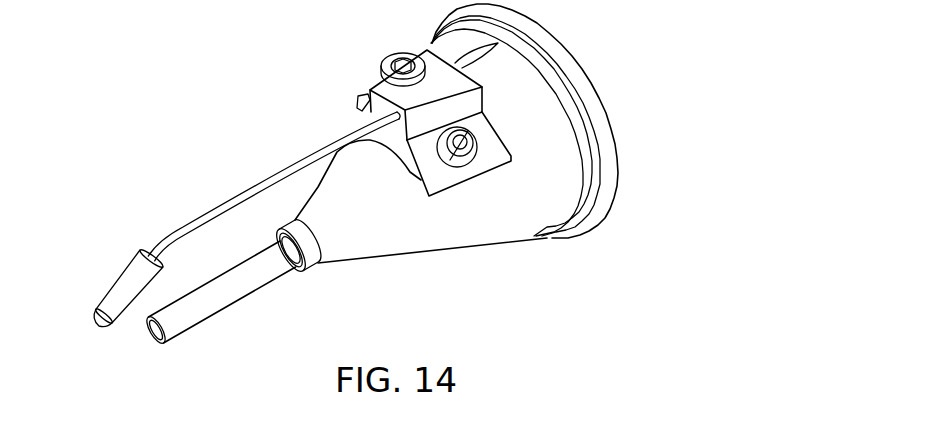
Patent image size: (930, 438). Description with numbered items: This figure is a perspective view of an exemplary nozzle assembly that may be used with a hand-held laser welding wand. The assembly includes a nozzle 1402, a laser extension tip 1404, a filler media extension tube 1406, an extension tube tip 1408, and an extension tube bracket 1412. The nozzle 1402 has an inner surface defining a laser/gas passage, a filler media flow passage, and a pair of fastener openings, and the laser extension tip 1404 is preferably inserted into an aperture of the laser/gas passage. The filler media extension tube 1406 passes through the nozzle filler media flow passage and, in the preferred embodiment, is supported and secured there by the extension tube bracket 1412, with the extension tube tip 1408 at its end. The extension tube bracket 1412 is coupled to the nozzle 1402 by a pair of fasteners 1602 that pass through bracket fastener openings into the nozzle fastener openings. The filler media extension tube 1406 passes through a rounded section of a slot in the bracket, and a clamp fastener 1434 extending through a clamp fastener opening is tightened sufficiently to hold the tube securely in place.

The nozzle 1402 is at (480, 243).
The laser extension tip 1404 is at (204, 320).
The filler media extension tube 1406 is at (196, 215).
The extension tube tip 1408 is at (125, 272).
The extension tube bracket 1412 is at (408, 50).
The clamp fastener 1434 is at (388, 64).
The fasteners 1602 is at (463, 146).